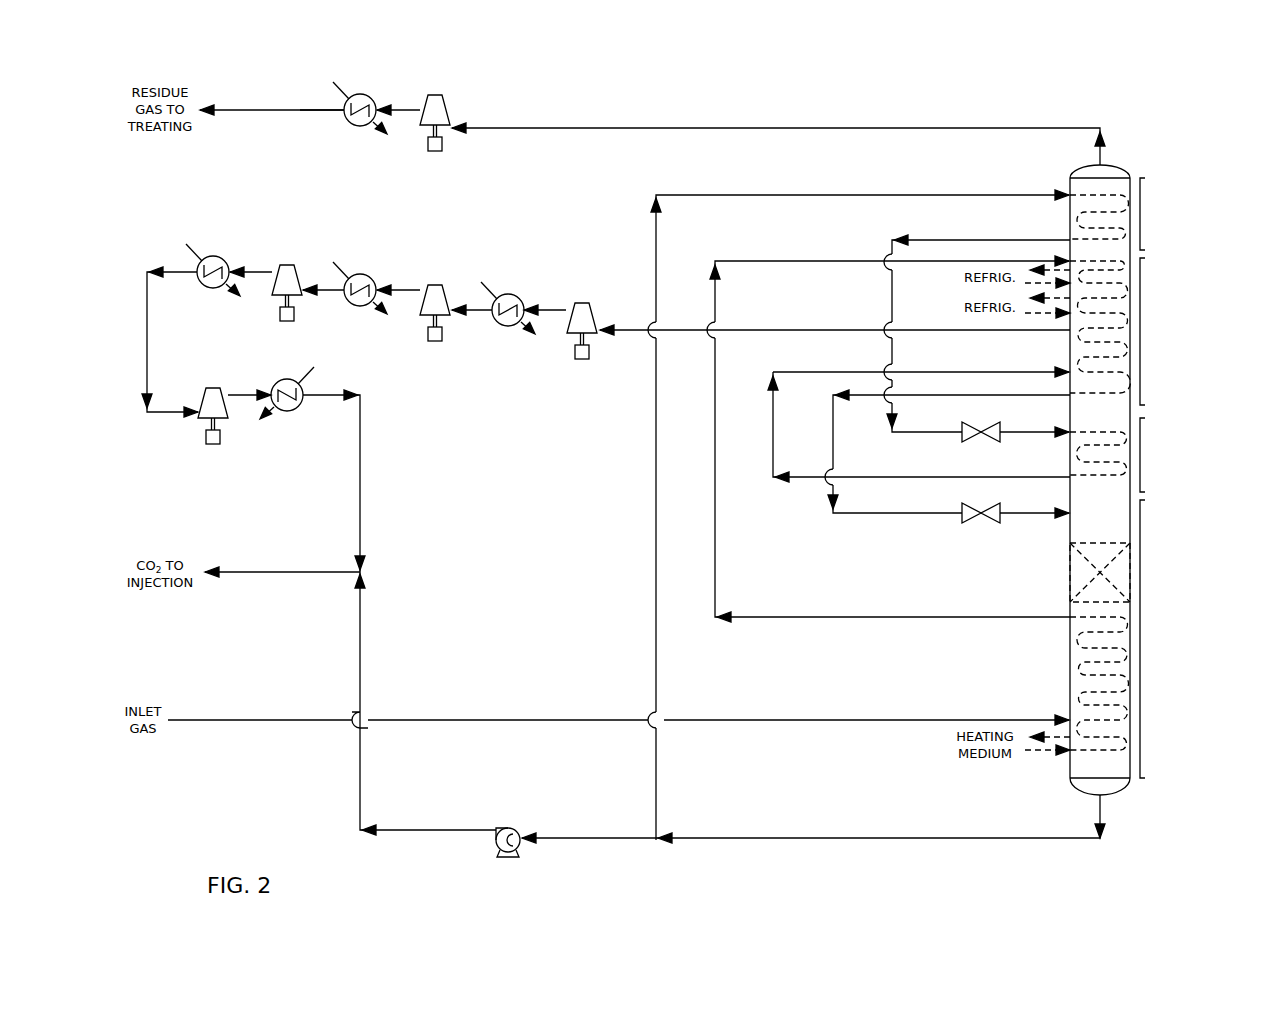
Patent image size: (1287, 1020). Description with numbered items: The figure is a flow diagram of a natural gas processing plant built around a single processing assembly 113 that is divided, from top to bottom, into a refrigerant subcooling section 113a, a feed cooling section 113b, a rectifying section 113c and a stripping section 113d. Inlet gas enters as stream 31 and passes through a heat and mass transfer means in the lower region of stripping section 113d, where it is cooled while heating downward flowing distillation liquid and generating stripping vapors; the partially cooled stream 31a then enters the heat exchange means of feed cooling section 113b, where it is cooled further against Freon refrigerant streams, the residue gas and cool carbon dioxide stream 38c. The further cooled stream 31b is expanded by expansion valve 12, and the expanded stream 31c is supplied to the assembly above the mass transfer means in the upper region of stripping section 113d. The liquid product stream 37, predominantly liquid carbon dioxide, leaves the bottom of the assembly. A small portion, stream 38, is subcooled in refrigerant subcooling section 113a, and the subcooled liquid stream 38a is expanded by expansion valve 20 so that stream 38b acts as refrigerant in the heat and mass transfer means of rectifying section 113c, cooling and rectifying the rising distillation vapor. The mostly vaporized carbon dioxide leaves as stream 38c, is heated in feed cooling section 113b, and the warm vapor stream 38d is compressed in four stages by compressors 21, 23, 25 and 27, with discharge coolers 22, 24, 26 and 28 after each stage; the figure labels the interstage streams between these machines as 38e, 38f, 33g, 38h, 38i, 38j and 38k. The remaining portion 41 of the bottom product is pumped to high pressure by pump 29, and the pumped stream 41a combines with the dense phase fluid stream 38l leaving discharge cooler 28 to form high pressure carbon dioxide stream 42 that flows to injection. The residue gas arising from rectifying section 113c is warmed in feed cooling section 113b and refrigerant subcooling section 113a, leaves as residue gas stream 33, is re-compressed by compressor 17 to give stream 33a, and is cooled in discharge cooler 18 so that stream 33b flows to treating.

The expansion valve 12 is at (966, 524).
The compressor 17 is at (435, 95).
The discharge cooler 18 is at (360, 128).
The expansion valve 20 is at (966, 443).
The compressor 21 is at (582, 301).
The discharge cooler 22 is at (507, 328).
The compressor 23 is at (435, 283).
The discharge cooler 24 is at (360, 308).
The compressor 25 is at (287, 262).
The discharge cooler 26 is at (212, 290).
The compressor 27 is at (212, 386).
The discharge cooler 28 is at (287, 413).
The pump 29 is at (507, 823).
The inlet gas stream 31 is at (286, 723).
The partially cooled stream 31a is at (1033, 620).
The further cooled stream 31b is at (830, 434).
The expanded stream 31c is at (1033, 517).
The residue gas stream 33 is at (583, 130).
The compressed residue gas stream 33a is at (405, 107).
The residue gas to treating 33b is at (290, 113).
The compressed refrigerant stream 33g is at (404, 286).
The column bottom product stream 37 is at (891, 841).
The refrigerant stream 38 is at (652, 434).
The subcooled liquid stream 38a is at (1033, 234).
The expanded stream 38b is at (1033, 436).
The cool carbon dioxide stream 38c is at (770, 434).
The warm carbon dioxide vapor stream 38d is at (1033, 332).
The refrigerant vapor stream from column 38e is at (549, 307).
The cooled compressed refrigerant stream 38f is at (475, 313).
The cooled compressed refrigerant stream 38h is at (331, 293).
The compressed refrigerant stream 38i is at (256, 270).
The cooled refrigerant stream 38j is at (180, 275).
The compressed refrigerant stream 38k is at (244, 392).
The dense phase fluid stream 38l is at (321, 398).
The remaining portion of column bottom product 41 is at (581, 841).
The pumped stream 41a is at (434, 833).
The high pressure carbon dioxide stream 42 is at (286, 575).
The processing assembly 113 is at (1060, 686).
The refrigerant subcooling section 113a is at (1155, 227).
The feed cooling section 113b is at (1140, 331).
The rectifying section 113c is at (1148, 458).
The stripping section 113d is at (1144, 639).